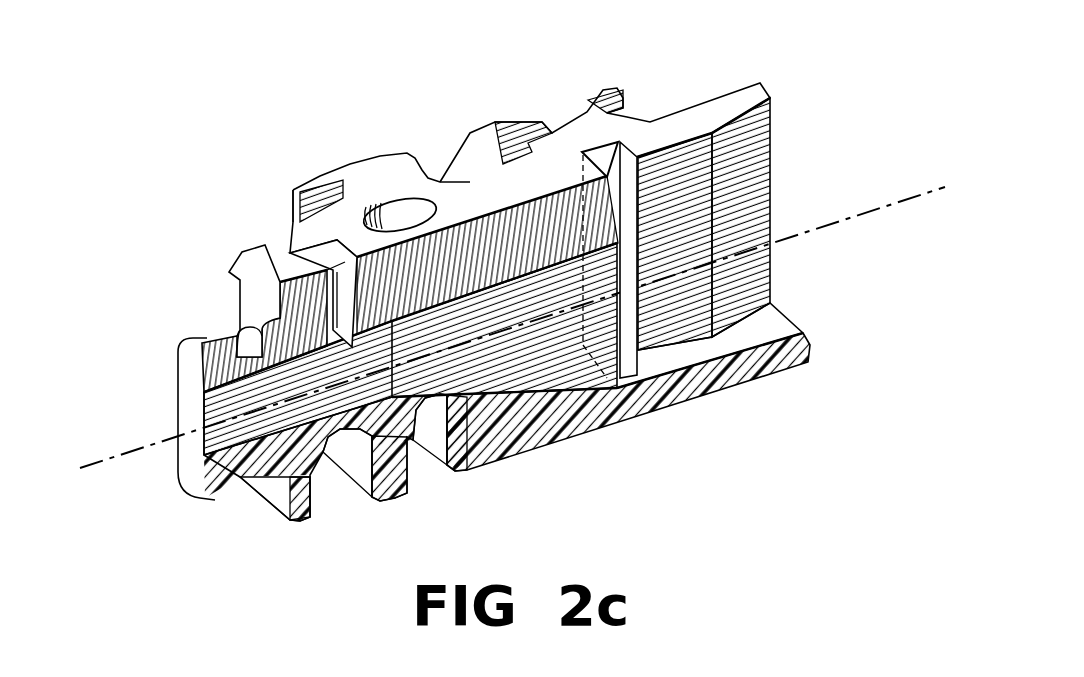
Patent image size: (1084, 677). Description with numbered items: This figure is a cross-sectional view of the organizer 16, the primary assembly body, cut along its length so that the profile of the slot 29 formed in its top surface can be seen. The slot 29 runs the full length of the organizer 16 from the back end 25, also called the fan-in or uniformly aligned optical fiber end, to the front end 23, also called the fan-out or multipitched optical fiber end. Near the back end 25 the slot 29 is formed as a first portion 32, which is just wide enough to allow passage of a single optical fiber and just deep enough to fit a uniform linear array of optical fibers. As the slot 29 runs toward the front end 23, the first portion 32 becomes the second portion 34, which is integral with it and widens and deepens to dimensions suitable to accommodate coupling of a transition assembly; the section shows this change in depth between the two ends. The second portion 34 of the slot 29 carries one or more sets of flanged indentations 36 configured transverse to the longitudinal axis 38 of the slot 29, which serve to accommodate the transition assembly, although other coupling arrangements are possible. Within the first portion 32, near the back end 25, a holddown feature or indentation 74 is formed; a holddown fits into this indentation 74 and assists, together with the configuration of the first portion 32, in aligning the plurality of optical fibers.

The organizer 16 is at (377, 106).
The front end 23 is at (813, 343).
The back end 25 is at (233, 297).
The slot 29 is at (488, 218).
The first portion 32 is at (288, 292).
The second portion 34 is at (697, 150).
The flanged indentations 36 is at (600, 157).
The longitudinal axis 38 is at (138, 457).
The holddown feature 74 is at (322, 262).